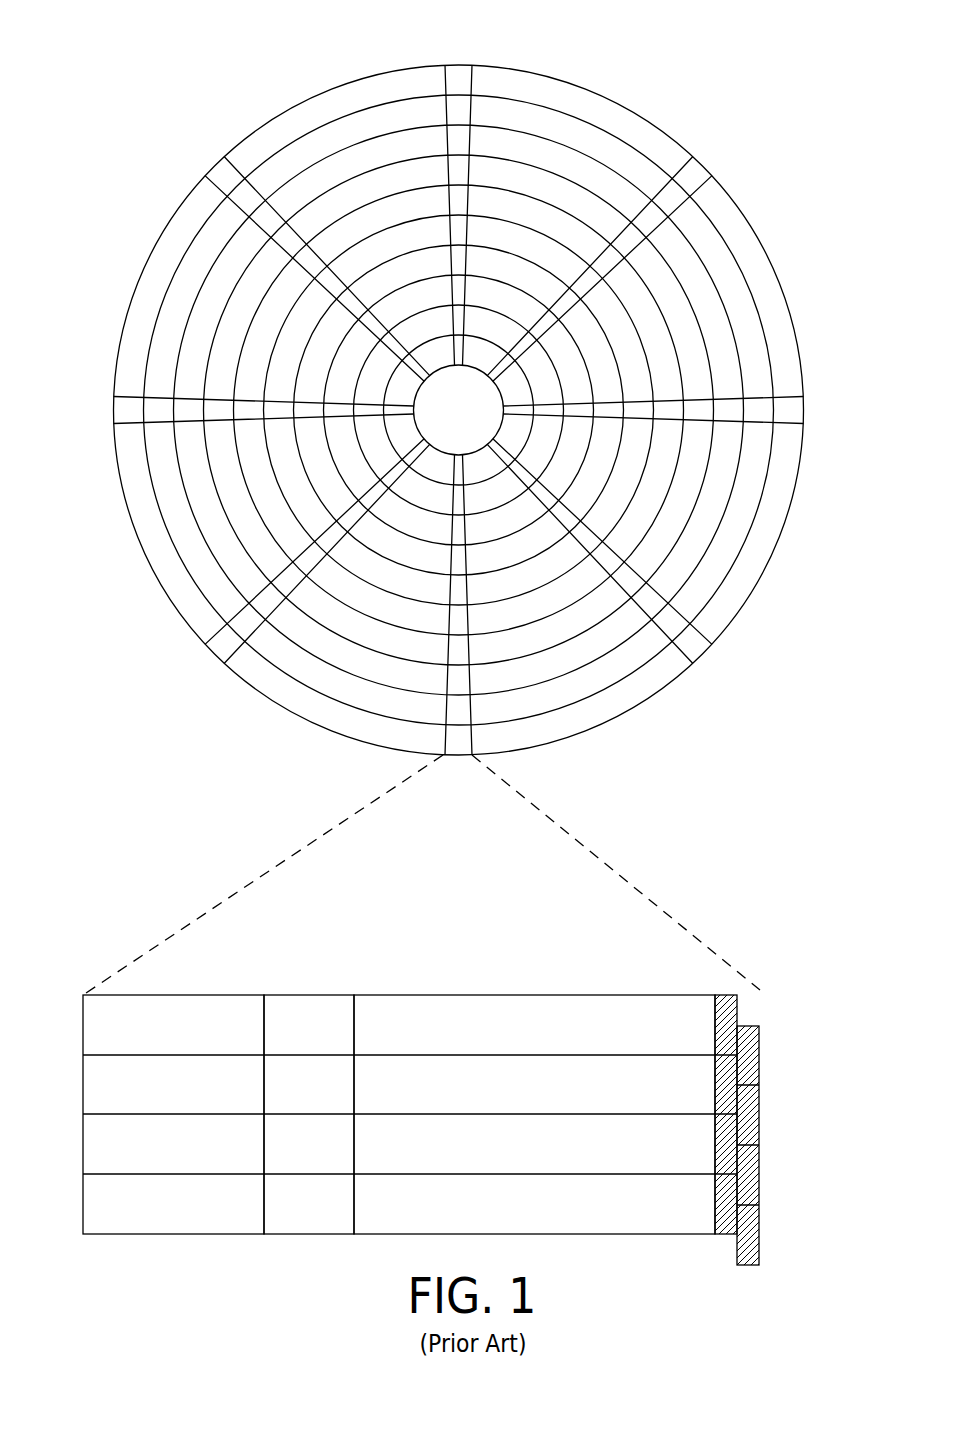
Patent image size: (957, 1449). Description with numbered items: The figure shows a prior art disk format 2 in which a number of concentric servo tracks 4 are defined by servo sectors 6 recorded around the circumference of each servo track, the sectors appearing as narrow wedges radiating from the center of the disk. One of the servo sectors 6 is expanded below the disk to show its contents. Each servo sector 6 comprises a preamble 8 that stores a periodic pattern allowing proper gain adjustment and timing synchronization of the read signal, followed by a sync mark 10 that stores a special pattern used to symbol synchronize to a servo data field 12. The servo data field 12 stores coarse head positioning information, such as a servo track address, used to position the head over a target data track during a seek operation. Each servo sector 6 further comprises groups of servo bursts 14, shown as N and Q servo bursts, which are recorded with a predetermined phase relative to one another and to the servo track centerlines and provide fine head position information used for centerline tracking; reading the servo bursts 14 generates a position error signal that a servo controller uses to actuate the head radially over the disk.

The disk format 2 is at (461, 420).
The servo tracks 4 is at (578, 135).
The servo sectors 6 is at (307, 836).
The preamble 8 is at (182, 993).
The sync mark 10 is at (310, 993).
The servo data field 12 is at (518, 993).
The servo bursts 14 is at (754, 991).